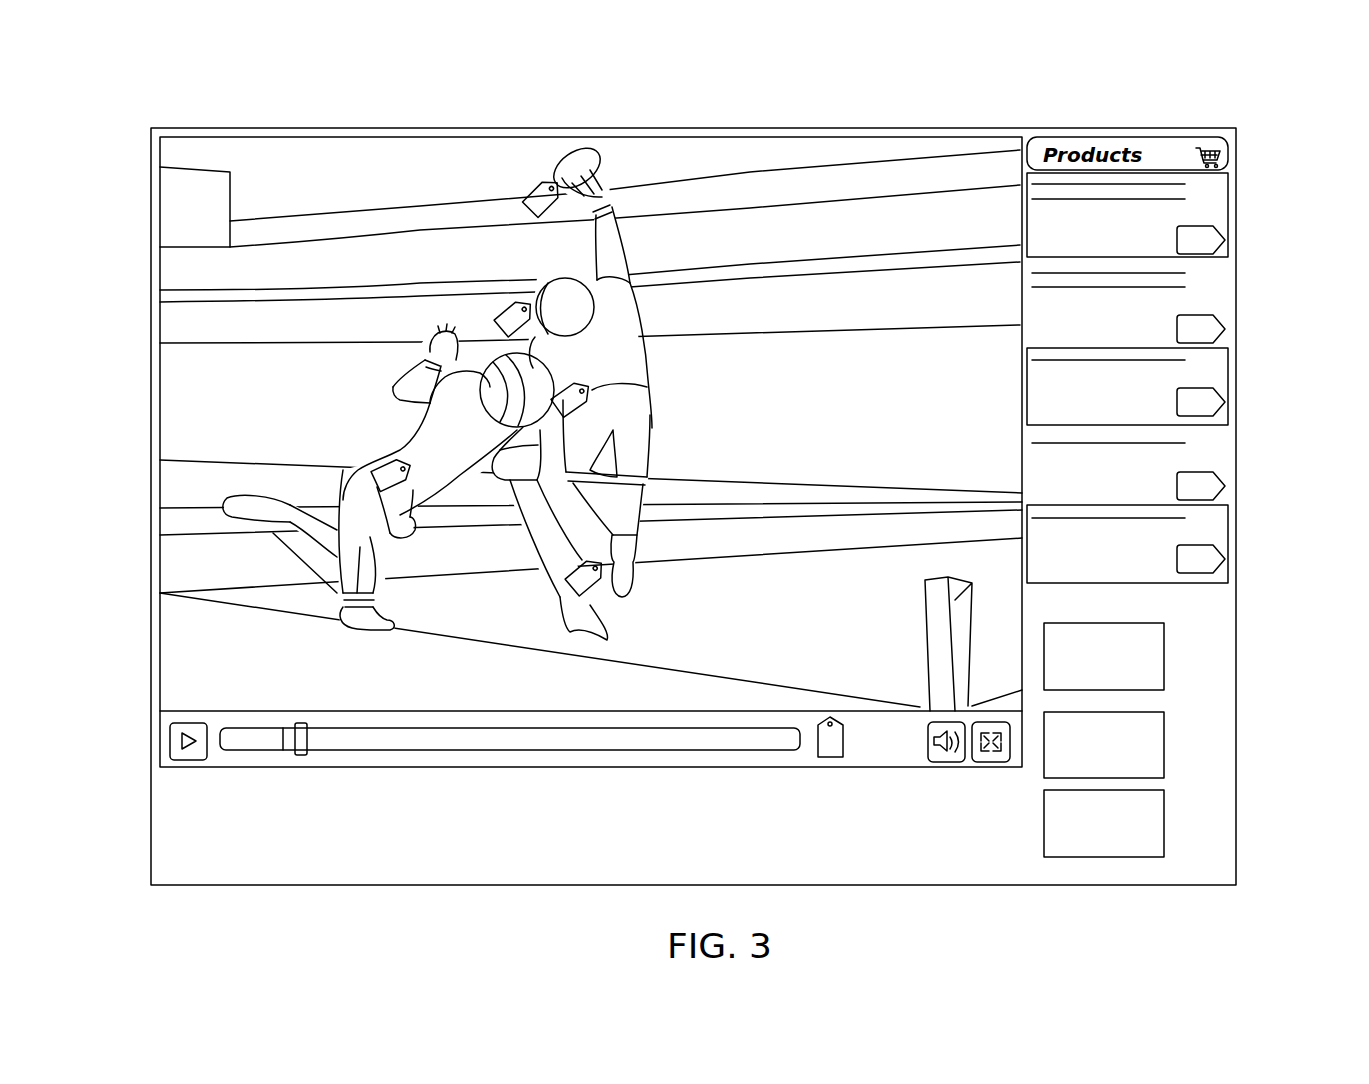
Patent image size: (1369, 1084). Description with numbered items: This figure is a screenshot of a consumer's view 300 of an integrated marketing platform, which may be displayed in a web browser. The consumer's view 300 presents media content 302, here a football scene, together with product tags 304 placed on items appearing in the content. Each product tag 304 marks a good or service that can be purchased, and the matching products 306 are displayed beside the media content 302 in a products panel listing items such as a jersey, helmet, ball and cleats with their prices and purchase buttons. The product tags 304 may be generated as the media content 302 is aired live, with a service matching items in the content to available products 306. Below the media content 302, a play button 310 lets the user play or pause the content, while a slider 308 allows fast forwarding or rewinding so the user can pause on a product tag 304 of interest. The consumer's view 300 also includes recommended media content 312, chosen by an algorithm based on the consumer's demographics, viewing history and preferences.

The consumer's view 300 is at (183, 86).
The media content 302 is at (561, 447).
The product tags 304 is at (522, 183).
The products 306 is at (1223, 208).
The slider 308 is at (335, 742).
The play button 310 is at (172, 745).
The recommended media content 312 is at (1195, 735).